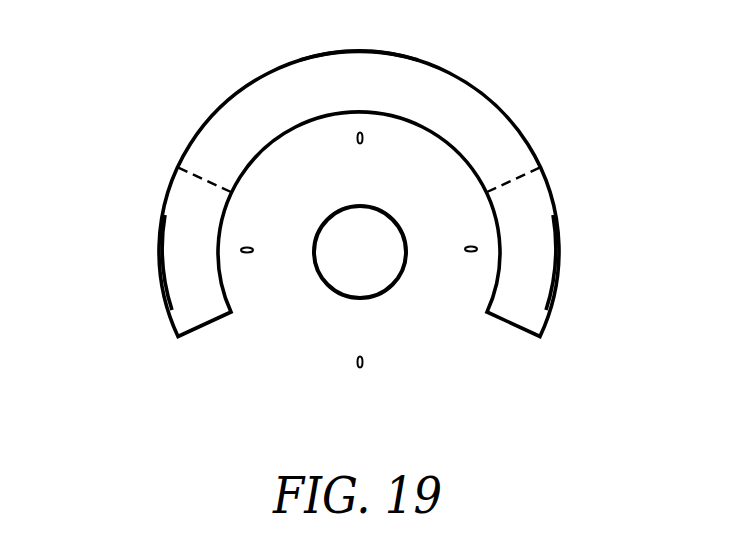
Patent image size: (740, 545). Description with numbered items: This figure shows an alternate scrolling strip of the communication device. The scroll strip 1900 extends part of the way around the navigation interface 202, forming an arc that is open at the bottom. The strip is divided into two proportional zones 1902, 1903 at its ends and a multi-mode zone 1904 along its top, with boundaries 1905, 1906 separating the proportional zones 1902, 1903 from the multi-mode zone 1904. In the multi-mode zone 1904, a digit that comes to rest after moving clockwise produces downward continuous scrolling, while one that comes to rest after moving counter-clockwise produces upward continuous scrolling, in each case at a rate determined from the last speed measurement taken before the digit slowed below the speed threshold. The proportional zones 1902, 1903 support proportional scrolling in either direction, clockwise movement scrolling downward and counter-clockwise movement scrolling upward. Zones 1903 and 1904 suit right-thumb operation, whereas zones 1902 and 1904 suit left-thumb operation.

The scroll strip 1900 is at (245, 108).
The proportional zone 1902 is at (543, 226).
The proportional zone 1903 is at (170, 276).
The multi-mode zone 1904 is at (359, 65).
The boundary 1905 is at (185, 163).
The boundary 1906 is at (523, 170).
The navigation interface 202 is at (424, 326).